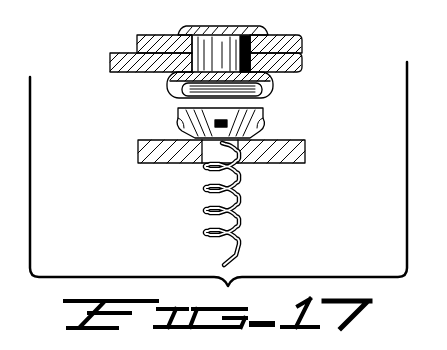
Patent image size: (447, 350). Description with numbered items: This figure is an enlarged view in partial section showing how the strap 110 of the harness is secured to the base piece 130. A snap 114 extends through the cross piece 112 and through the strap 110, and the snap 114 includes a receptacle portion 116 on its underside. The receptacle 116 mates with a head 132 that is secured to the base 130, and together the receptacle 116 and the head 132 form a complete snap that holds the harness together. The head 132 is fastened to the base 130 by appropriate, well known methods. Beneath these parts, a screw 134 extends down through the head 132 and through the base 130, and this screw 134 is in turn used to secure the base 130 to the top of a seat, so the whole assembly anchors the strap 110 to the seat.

The strap 110 is at (110, 60).
The cross piece 112 is at (302, 48).
The snap 114 is at (232, 26).
The receptacle portion 116 is at (275, 88).
The base piece 130 is at (305, 152).
The head 132 is at (266, 118).
The screw 134 is at (240, 204).